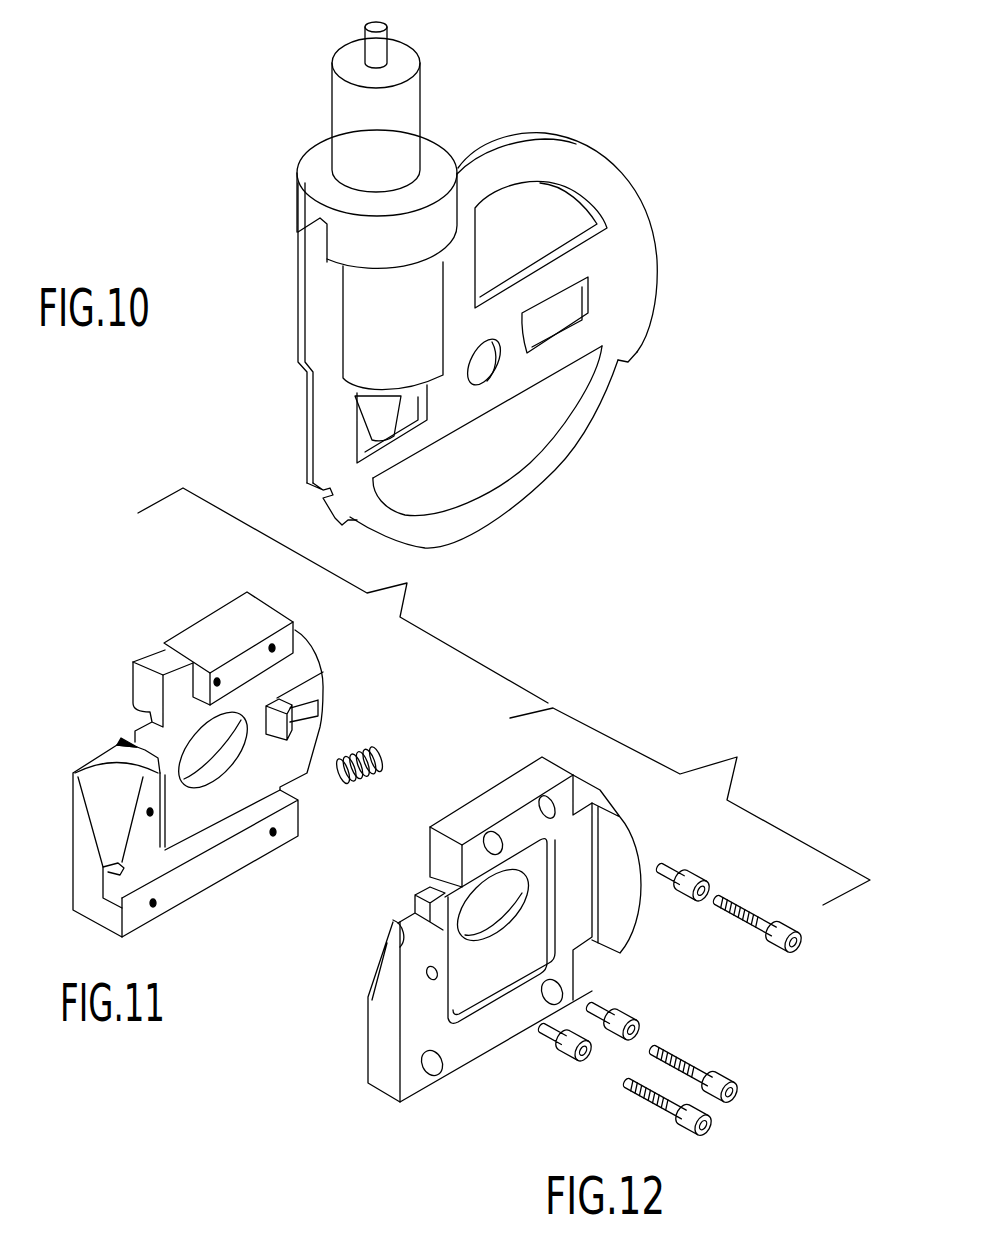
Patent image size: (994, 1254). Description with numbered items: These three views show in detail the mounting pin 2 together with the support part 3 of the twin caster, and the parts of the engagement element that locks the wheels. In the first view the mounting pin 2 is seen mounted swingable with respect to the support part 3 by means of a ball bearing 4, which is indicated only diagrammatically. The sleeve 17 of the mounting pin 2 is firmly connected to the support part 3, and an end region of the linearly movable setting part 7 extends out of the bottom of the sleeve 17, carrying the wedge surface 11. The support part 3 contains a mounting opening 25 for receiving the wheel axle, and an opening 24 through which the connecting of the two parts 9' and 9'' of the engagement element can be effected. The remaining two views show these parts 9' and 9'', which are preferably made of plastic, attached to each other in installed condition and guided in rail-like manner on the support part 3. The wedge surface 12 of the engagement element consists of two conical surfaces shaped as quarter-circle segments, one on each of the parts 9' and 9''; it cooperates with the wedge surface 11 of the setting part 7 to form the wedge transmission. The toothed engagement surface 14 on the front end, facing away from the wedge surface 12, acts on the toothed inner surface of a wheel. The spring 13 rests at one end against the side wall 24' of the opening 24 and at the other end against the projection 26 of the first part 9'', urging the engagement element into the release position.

In FIG. 10, the mounting pin 2 is at (427, 80).
In FIG. 10, the support part 3 is at (625, 182).
In FIG. 10, the ball bearing 4 is at (387, 234).
In FIG. 10, the setting part 7 is at (378, 48).
In FIG. 12, the part of the engagement element 9' is at (495, 970).
In FIG. 11, the first part of the engagement element 9'' is at (202, 764).
In FIG. 10, the wedge surface 11 is at (380, 418).
In FIG. 11, the wedge surface 12 is at (117, 810).
In FIG. 12, the wedge surface 12 is at (393, 940).
In FIG. 11, the spring 13 is at (388, 758).
In FIG. 11, the engagement surface 14 is at (325, 720).
In FIG. 12, the engagement surface 14 is at (643, 835).
In FIG. 10, the sleeve 17 is at (390, 302).
In FIG. 10, the opening 24 is at (618, 315).
In FIG. 10, the side wall of the opening 24' is at (629, 284).
In FIG. 10, the mounting opening 25 is at (493, 370).
In FIG. 11, the projection 26 is at (283, 703).